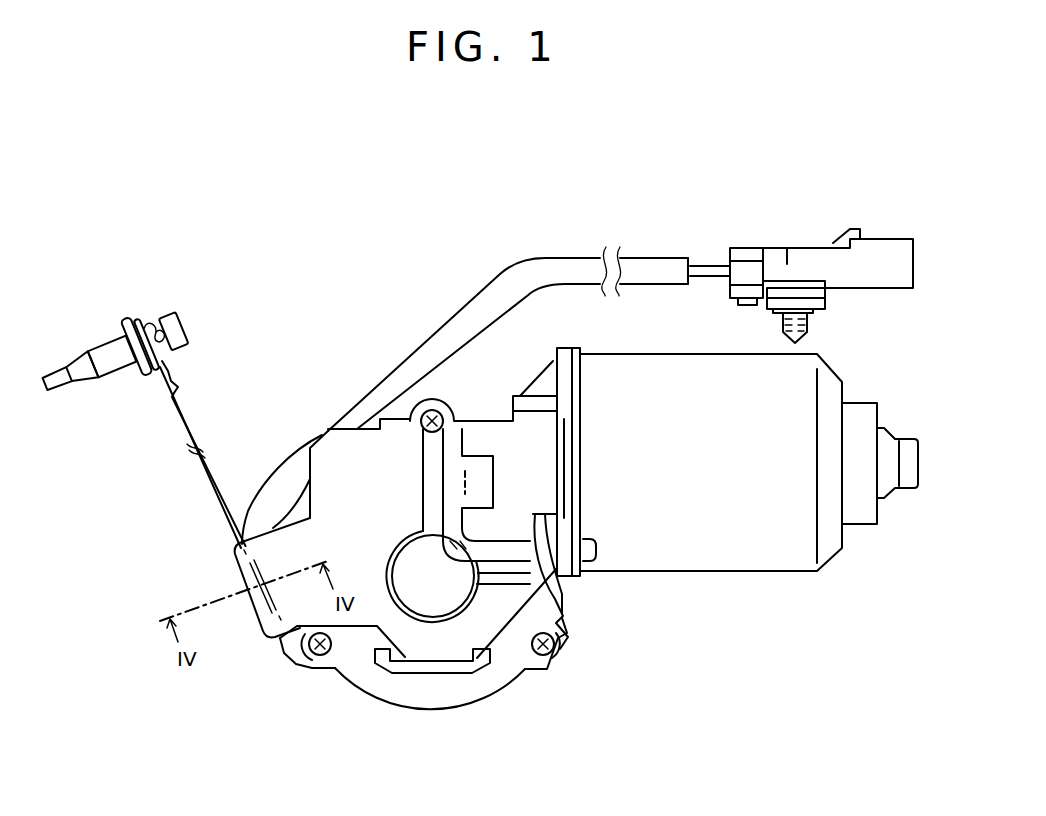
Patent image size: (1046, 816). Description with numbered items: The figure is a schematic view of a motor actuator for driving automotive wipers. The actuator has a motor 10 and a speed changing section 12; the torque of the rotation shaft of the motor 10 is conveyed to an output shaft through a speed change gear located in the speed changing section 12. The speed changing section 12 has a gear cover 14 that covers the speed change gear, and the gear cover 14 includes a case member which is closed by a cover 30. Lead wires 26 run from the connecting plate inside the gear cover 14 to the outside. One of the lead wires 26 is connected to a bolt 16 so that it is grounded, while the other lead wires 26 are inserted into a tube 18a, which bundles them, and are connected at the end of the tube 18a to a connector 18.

The motor 10 is at (745, 560).
The speed changing section 12 is at (452, 710).
The gear cover 14 is at (403, 693).
The bolt 16 is at (183, 322).
The connector 18 is at (887, 252).
The tube 18a is at (568, 253).
The lead wires 26 is at (208, 486).
The cover 30 is at (473, 622).